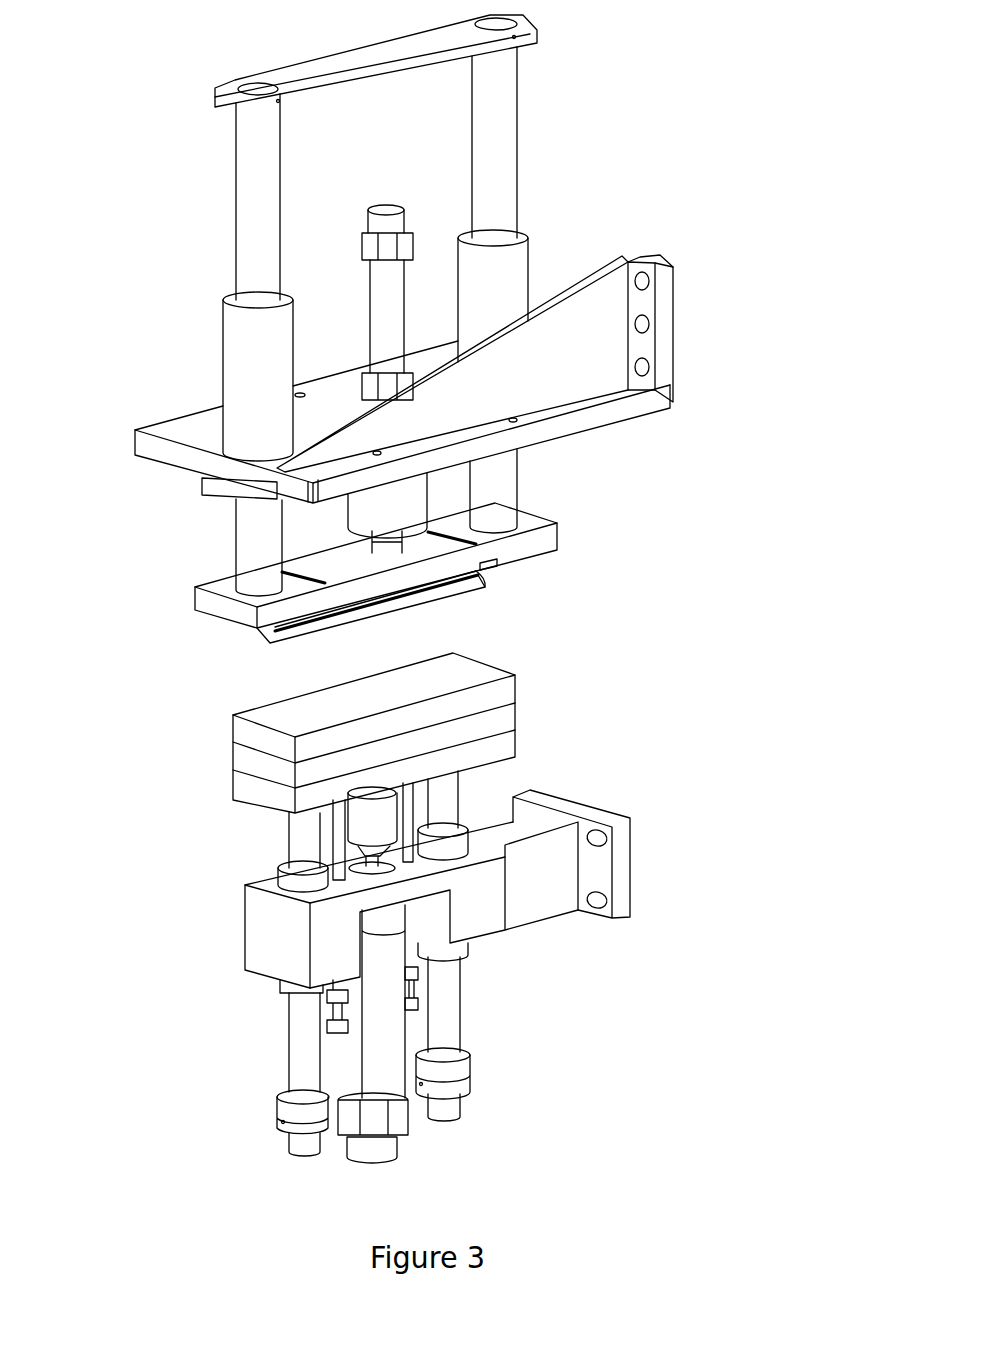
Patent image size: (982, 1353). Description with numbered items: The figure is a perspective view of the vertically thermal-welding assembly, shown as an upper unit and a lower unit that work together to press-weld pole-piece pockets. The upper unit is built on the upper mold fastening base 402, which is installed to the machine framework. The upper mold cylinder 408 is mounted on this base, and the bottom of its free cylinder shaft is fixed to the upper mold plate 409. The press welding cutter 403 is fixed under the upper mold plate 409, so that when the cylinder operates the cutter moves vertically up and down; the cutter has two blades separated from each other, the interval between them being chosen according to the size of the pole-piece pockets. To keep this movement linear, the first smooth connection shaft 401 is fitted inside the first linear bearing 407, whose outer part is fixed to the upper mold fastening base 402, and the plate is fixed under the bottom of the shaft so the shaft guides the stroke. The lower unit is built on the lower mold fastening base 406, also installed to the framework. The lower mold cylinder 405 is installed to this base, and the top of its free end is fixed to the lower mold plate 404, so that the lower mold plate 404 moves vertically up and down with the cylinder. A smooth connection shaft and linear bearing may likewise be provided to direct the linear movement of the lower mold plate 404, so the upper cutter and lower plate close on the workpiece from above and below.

The first smooth connection shaft 401 is at (500, 170).
The upper mold fastening base 402 is at (578, 367).
The press welding cutter 403 is at (443, 590).
The lower mold plate 404 is at (488, 693).
The lower mold cylinder 405 is at (373, 1070).
The lower mold fastening base 406 is at (287, 950).
The first linear bearing 407 is at (265, 385).
The upper mold cylinder 408 is at (387, 307).
The upper mold plate 409 is at (470, 566).